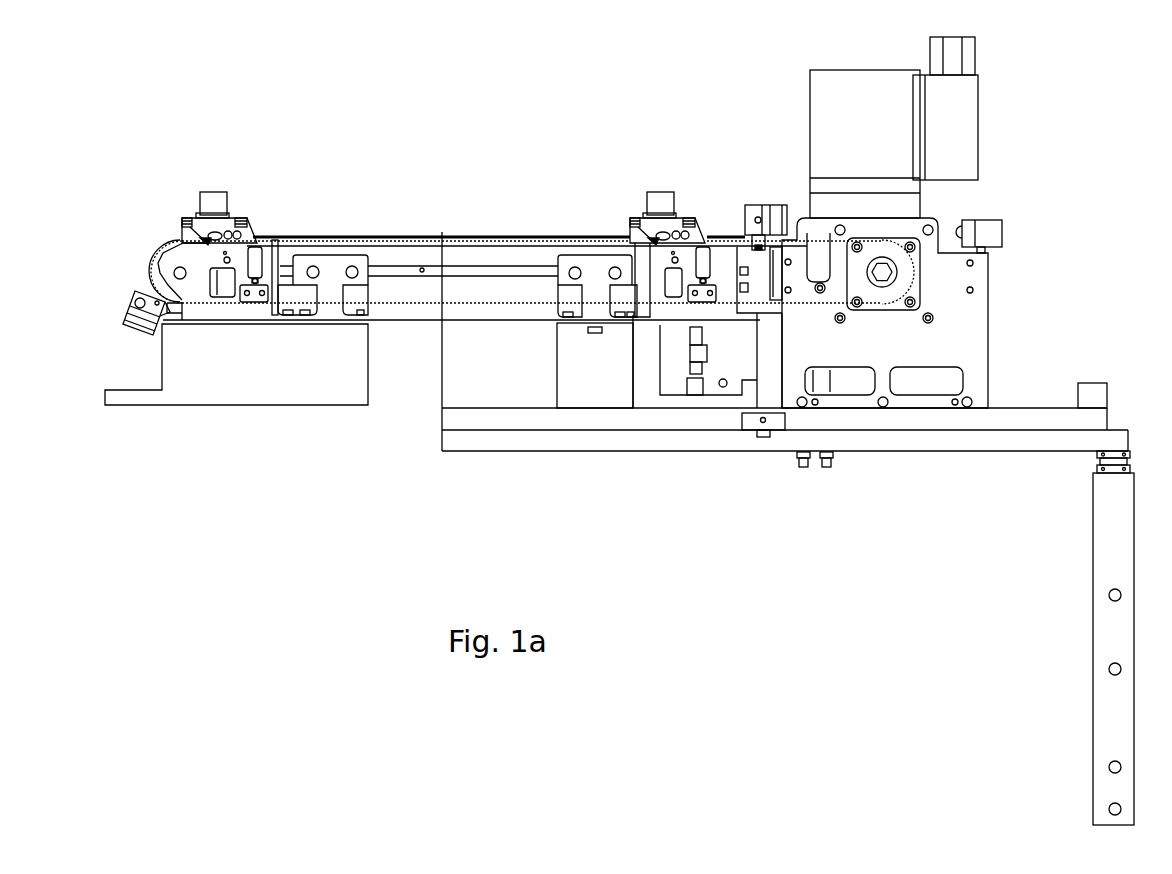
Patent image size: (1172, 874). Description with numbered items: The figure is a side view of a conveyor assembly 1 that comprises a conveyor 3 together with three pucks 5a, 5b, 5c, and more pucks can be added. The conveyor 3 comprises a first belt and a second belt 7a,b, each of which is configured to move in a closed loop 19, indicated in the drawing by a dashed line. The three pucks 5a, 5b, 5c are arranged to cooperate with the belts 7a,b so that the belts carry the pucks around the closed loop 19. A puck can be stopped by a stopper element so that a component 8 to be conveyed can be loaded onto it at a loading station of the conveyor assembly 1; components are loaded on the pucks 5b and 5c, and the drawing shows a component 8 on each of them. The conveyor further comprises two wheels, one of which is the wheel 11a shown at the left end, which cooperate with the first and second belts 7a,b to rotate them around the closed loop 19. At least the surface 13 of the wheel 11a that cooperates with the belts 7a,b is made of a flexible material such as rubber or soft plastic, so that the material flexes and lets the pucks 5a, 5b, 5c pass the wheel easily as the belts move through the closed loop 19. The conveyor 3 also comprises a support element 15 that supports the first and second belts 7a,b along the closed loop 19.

The conveyor assembly 1 is at (552, 119).
The conveyor 3 is at (490, 233).
The puck 5a is at (132, 305).
The puck 5b is at (183, 230).
The puck 5c is at (630, 232).
The first belt and second belt 7a,b is at (150, 262).
The component 8 is at (223, 198).
The wheel 11a is at (155, 277).
The surface 13 is at (157, 243).
The support element 15 is at (318, 245).
The closed loop 19 is at (395, 233).